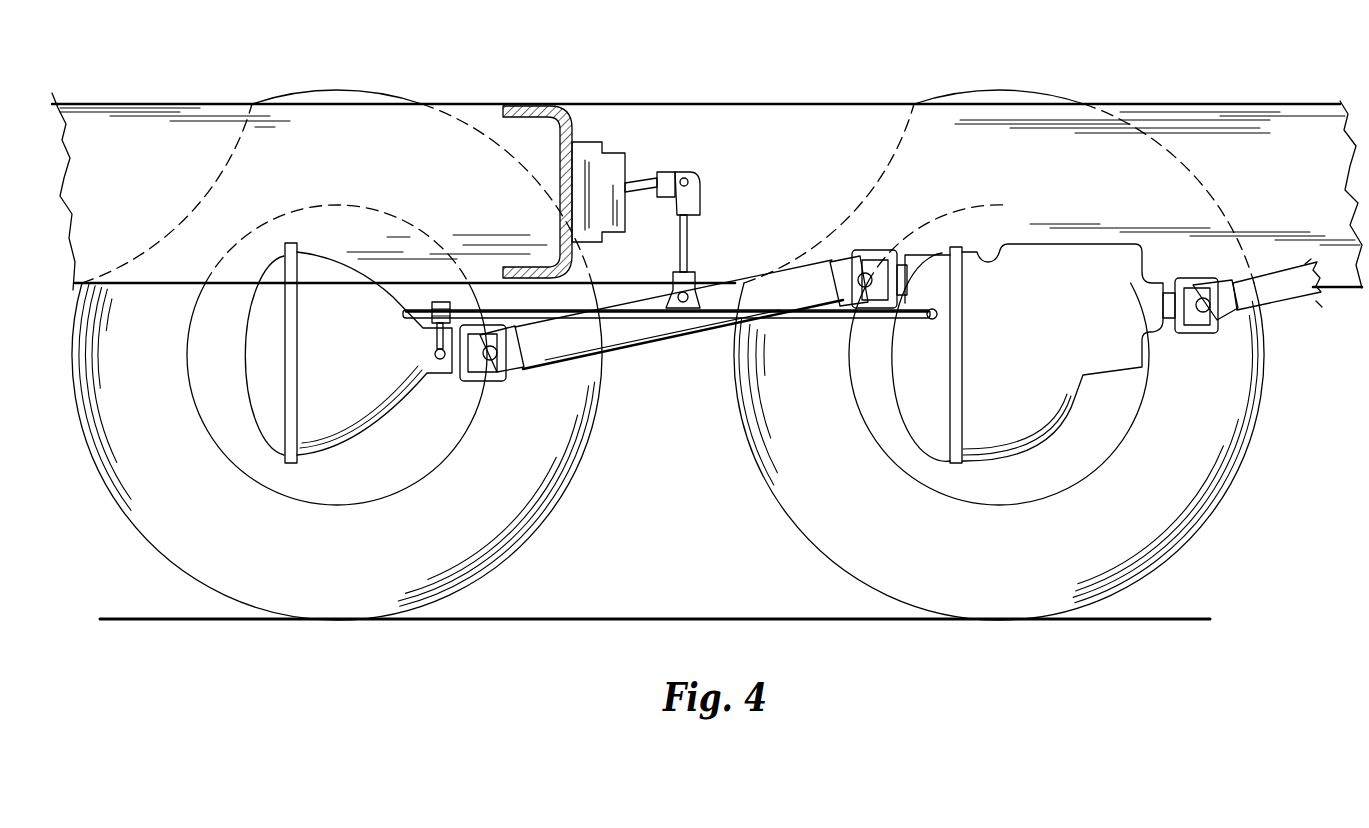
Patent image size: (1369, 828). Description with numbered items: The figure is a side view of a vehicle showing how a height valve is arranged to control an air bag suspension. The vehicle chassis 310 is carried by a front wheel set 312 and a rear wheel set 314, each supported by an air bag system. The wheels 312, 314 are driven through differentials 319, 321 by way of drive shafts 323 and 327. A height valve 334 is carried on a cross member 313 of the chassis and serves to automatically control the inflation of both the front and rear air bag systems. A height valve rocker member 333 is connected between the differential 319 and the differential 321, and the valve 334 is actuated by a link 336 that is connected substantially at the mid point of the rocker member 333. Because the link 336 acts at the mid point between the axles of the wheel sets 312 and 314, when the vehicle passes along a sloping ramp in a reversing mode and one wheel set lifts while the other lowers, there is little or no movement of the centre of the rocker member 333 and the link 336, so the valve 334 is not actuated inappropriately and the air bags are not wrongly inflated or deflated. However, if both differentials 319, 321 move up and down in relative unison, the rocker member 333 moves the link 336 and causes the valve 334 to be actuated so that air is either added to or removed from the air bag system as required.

The vehicle chassis 310 is at (781, 103).
The front wheel set 312 is at (1005, 571).
The cross member 313 is at (578, 103).
The rear wheel set 314 is at (345, 570).
The differential 319 is at (1020, 358).
The differential 321 is at (355, 369).
The drive shaft 323 is at (1281, 297).
The drive shaft 327 is at (579, 338).
The height valve rocker member 333 is at (629, 318).
The height valve 334 is at (601, 165).
The link 336 is at (690, 238).